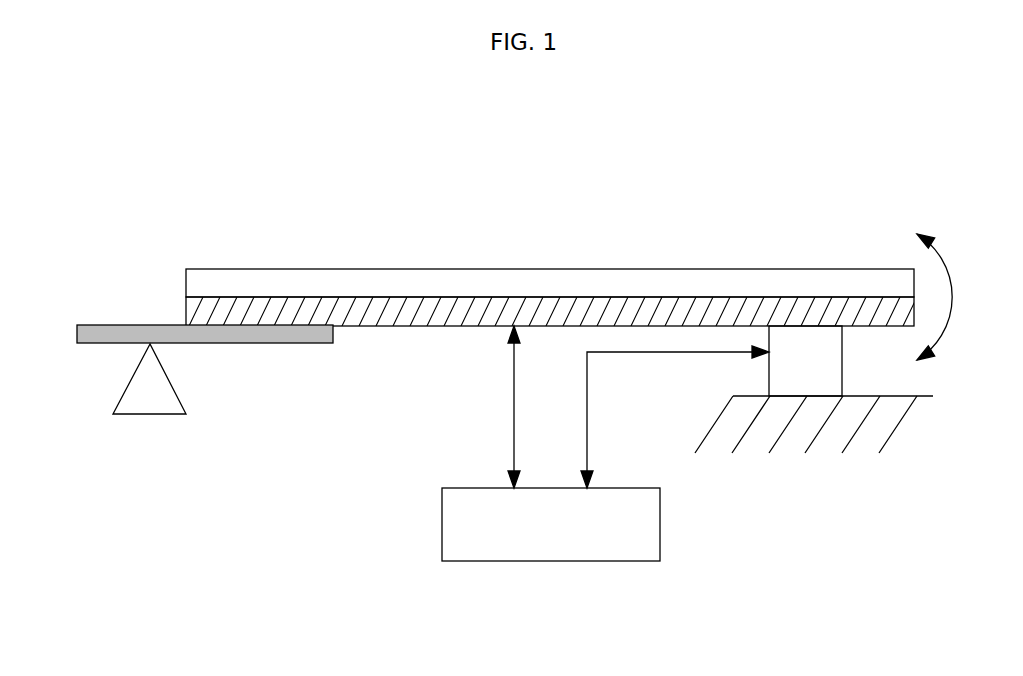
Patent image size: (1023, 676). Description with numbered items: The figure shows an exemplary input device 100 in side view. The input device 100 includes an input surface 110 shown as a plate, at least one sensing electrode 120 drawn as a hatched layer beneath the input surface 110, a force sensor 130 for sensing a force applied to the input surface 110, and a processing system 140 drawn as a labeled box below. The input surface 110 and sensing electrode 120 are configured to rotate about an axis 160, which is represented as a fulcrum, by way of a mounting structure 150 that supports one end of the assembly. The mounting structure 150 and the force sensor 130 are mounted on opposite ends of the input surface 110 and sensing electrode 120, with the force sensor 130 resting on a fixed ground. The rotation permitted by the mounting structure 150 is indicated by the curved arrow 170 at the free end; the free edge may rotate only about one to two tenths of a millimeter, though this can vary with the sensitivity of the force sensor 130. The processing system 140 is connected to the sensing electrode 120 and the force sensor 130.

The input device 100 is at (171, 90).
The input surface 110 is at (400, 268).
The sensing electrode 120 is at (377, 326).
The force sensor 130 is at (842, 371).
The processing system 140 is at (585, 562).
The mounting structure 150 is at (142, 323).
The axis 160 is at (149, 416).
The arrow 170 is at (948, 325).